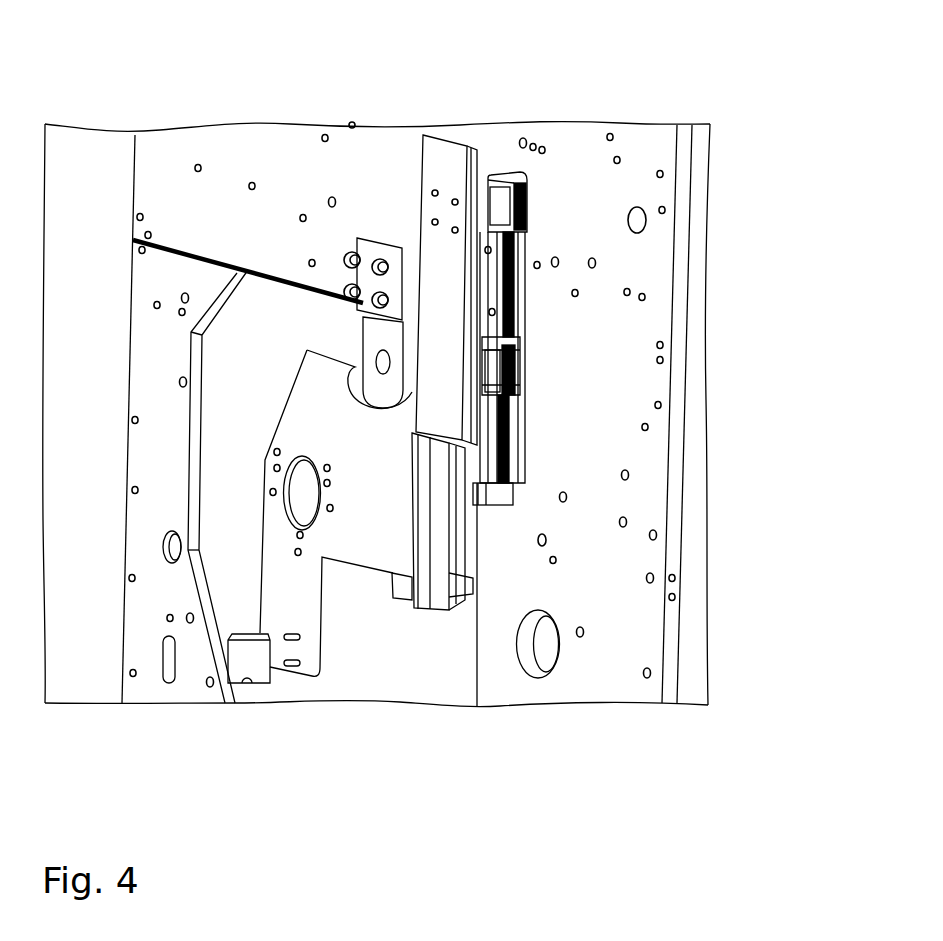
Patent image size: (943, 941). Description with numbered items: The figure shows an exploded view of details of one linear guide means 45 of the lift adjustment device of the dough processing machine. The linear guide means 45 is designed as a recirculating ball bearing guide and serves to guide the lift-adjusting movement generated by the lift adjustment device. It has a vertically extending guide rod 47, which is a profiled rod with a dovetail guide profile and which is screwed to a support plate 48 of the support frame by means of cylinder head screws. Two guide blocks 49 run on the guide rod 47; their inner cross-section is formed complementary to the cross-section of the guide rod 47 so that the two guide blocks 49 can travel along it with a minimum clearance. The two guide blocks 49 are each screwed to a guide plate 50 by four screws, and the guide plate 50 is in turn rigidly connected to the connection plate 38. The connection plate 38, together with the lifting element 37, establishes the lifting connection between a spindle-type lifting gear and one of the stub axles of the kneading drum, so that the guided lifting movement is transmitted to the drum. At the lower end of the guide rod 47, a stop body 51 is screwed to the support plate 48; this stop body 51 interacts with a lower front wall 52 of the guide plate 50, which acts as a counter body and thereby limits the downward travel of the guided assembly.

The lifting element 37 is at (258, 683).
The connection plate 38 is at (363, 553).
The linear guide means 45 is at (643, 353).
The guide rod 47 is at (507, 305).
The support plate 48 is at (655, 495).
The guide blocks 49 is at (507, 210).
The guide plate 50 is at (447, 155).
The stop body 51 is at (502, 495).
The lower front wall 52 is at (450, 455).